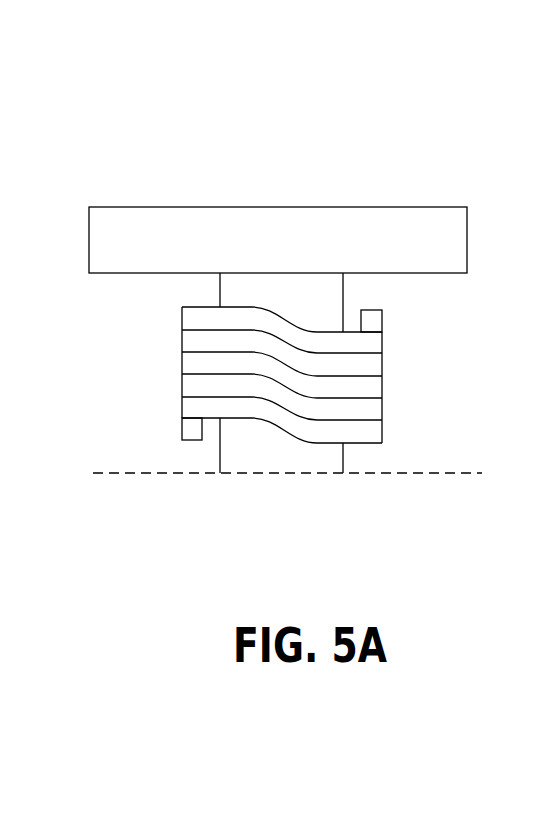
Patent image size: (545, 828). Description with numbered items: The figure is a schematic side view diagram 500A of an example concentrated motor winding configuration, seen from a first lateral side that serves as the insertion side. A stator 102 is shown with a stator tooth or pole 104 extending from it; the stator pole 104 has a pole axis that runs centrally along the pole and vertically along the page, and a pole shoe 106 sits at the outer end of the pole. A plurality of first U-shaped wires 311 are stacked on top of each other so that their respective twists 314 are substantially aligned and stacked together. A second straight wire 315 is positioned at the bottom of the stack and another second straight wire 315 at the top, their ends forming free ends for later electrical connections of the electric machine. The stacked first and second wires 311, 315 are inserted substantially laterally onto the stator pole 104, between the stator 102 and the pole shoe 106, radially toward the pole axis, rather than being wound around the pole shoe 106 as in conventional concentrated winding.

The schematic side view diagram 500A is at (413, 130).
The pole shoe 106 is at (132, 207).
The stator pole 104 is at (218, 455).
The stator 102 is at (150, 480).
The first U-shaped wire 311 is at (385, 339).
The twist 314 is at (327, 426).
The second straight wire 315 is at (385, 318).